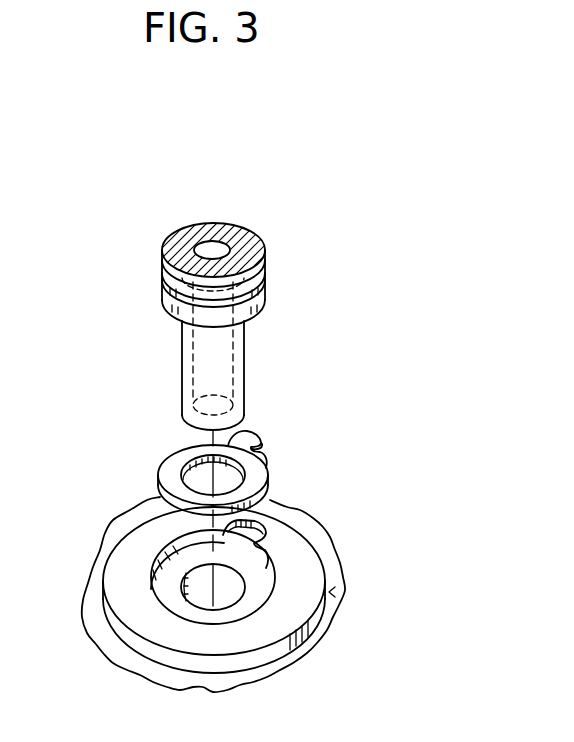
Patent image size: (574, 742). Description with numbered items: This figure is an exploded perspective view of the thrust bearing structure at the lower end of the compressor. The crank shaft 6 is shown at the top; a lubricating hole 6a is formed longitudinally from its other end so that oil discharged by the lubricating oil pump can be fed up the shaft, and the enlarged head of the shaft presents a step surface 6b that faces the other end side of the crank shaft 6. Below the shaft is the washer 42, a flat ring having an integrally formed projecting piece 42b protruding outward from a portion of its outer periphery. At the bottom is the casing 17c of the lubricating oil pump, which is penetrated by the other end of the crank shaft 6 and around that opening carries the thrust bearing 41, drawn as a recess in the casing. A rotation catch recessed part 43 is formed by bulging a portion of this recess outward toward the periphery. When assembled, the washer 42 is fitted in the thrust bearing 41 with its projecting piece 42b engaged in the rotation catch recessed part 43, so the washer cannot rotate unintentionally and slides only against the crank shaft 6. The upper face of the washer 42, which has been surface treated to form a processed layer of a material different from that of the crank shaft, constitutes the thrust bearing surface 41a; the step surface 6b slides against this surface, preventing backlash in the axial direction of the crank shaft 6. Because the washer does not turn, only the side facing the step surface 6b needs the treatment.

The crank shaft 6 is at (210, 326).
The lubricating hole 6a is at (168, 245).
The step surface 6b is at (263, 311).
The washer 42 is at (222, 455).
The projecting piece 42b is at (246, 432).
The thrust bearing 41 is at (286, 552).
The thrust bearing surface 41a is at (267, 462).
The rotation catch recessed part 43 is at (255, 579).
The casing 17c is at (333, 590).